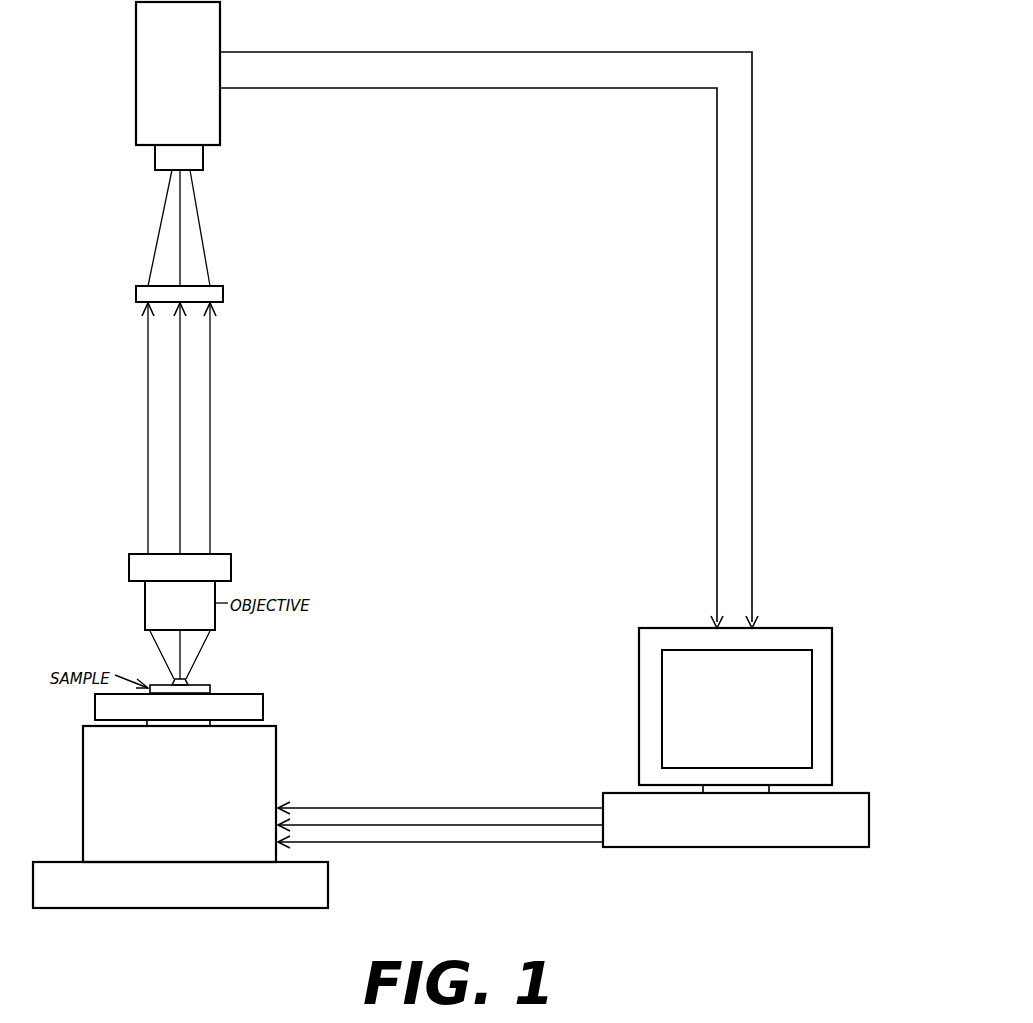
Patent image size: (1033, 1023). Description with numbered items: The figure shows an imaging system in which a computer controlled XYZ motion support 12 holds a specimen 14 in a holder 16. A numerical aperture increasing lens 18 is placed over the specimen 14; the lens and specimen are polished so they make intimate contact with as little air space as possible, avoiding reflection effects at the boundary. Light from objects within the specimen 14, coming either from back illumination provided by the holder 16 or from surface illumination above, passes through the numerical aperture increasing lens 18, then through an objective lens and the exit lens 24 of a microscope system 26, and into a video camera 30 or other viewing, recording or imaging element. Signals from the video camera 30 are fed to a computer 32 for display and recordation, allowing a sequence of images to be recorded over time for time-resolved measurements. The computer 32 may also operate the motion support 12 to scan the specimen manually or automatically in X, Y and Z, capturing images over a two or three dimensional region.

The computer controlled XYZ motion support 12 is at (277, 763).
The specimen 14 is at (212, 688).
The holder 16 is at (264, 705).
The numerical aperture increasing lens 18 is at (170, 678).
The exit lens 24 is at (140, 286).
The microscope system 26 is at (243, 278).
The video camera 30 is at (221, 18).
The computer 32 is at (638, 715).